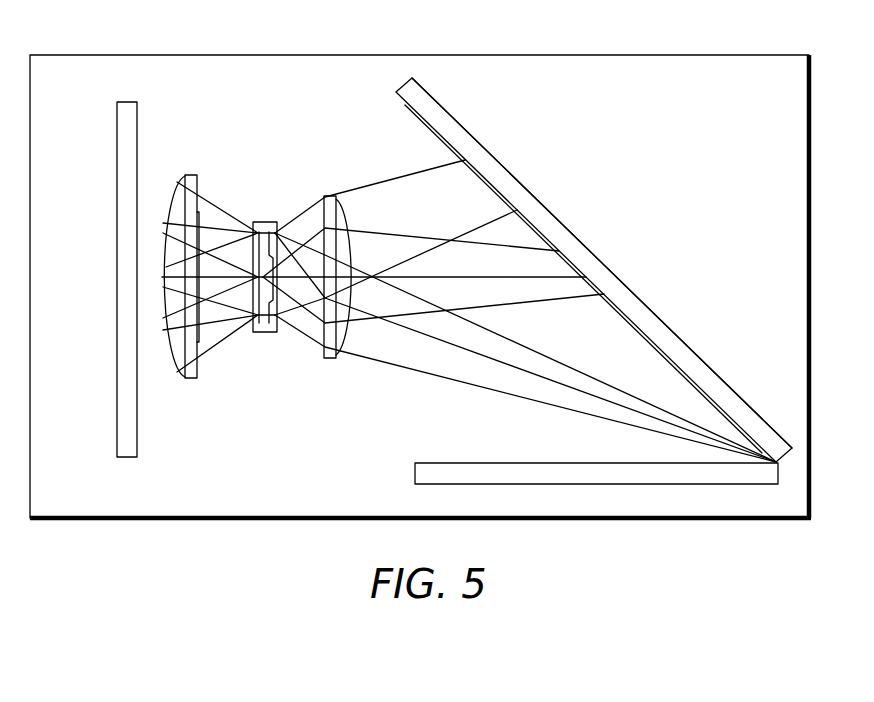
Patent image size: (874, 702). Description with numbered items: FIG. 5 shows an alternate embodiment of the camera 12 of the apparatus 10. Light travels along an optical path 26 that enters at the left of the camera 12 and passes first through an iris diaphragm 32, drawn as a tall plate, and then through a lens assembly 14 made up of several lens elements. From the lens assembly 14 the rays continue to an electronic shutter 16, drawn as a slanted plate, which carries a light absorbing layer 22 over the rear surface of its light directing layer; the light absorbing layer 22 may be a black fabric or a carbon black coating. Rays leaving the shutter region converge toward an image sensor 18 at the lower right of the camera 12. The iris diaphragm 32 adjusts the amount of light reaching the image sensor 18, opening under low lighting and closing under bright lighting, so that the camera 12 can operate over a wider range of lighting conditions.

The display apparatus 10 is at (792, 55).
The camera 12 is at (778, 210).
The lens assembly 14 is at (263, 390).
The electronic shutter 16 is at (428, 122).
The image sensor 18 is at (782, 471).
The light absorbing layer 22 is at (578, 236).
The optical path 26 is at (108, 279).
The iris diaphragm 32 is at (123, 102).